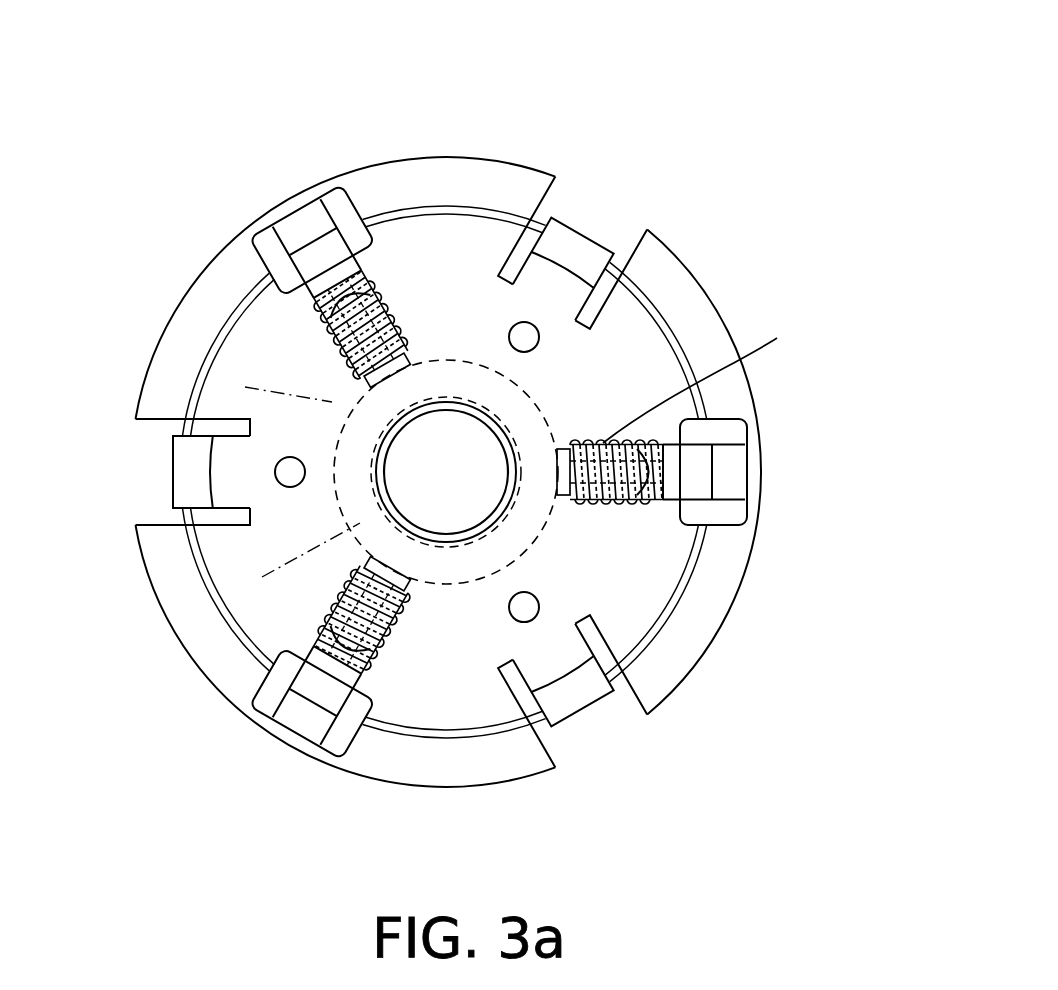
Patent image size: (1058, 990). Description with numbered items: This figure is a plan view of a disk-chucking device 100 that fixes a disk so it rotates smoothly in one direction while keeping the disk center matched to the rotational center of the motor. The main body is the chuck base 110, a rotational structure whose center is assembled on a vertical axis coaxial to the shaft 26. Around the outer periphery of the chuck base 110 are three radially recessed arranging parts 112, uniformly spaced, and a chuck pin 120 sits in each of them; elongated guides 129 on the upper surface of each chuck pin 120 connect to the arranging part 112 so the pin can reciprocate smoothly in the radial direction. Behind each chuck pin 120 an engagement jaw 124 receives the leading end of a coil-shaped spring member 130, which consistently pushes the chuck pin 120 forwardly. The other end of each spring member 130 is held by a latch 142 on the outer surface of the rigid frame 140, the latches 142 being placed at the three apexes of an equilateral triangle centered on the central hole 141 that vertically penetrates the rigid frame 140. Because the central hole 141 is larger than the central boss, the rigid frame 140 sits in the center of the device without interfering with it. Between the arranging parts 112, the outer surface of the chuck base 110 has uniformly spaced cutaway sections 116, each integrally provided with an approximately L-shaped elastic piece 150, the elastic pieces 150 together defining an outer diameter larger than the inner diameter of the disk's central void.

The disk-chucking device 100 is at (654, 170).
The chuck base 110 is at (632, 612).
The arranging part 112 is at (337, 262).
The cutaway section 116 is at (610, 653).
The chuck pin 120 is at (318, 253).
The engagement jaw 124 is at (320, 290).
The elongated guide 129 is at (290, 275).
The spring member 130 is at (777, 338).
The rigid frame 140 is at (347, 525).
The central hole 141 is at (478, 408).
The latch 142 is at (347, 357).
The elastic piece 150 is at (570, 700).
The shaft 26 is at (417, 462).